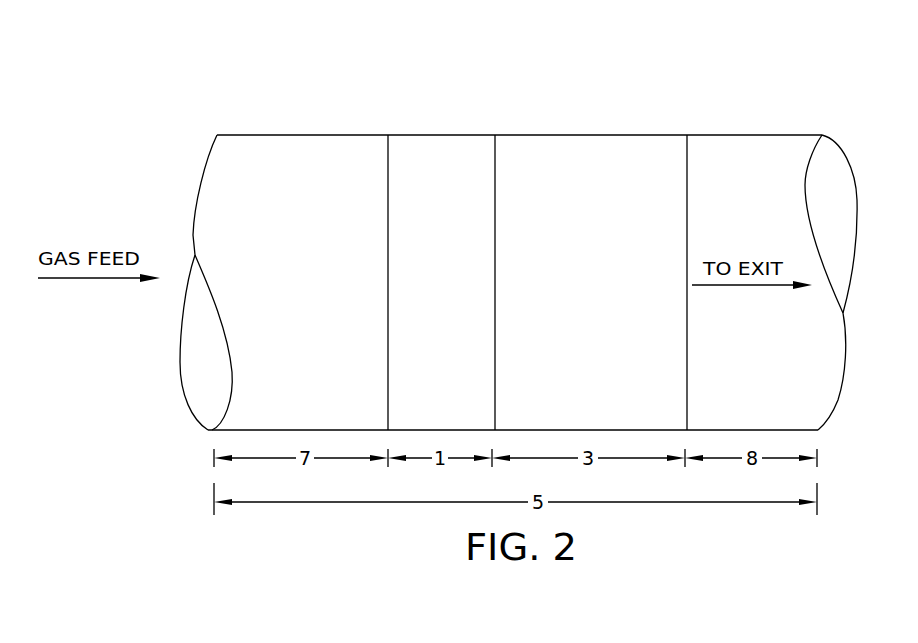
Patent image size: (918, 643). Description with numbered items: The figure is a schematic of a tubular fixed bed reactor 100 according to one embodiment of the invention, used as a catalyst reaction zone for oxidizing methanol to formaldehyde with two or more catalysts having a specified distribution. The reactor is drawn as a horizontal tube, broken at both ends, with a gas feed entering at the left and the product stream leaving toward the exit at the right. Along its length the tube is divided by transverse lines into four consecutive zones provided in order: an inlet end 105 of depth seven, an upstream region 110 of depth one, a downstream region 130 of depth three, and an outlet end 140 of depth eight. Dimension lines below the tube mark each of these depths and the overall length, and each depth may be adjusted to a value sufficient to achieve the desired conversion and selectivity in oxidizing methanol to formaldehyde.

The reactor tube assembly 100 is at (518, 221).
The inlet end 105 is at (332, 135).
The upstream region 110 is at (462, 135).
The downstream region 130 is at (638, 135).
The outlet end 140 is at (792, 135).